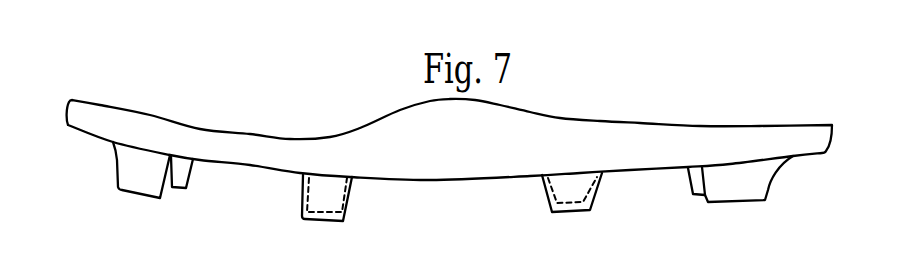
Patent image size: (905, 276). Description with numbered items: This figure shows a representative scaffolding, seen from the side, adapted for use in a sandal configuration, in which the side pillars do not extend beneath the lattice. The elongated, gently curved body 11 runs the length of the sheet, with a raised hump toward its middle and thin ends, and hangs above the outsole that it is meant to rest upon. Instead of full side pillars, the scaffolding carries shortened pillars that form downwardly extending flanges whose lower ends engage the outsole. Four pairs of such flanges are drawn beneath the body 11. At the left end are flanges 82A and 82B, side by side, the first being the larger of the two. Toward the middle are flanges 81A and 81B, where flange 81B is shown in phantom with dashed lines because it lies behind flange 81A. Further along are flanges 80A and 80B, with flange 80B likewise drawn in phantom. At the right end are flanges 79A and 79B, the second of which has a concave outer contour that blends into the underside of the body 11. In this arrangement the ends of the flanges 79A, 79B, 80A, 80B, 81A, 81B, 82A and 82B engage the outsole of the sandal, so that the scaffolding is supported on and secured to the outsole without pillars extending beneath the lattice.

The board body 11 is at (582, 128).
The flange 79A is at (698, 197).
The flange 79B is at (740, 202).
The flange 80A is at (555, 213).
The flange 80B is at (585, 207).
The flange 81A is at (336, 222).
The flange 81B is at (323, 210).
The flange 82A is at (130, 190).
The flange 82B is at (177, 190).